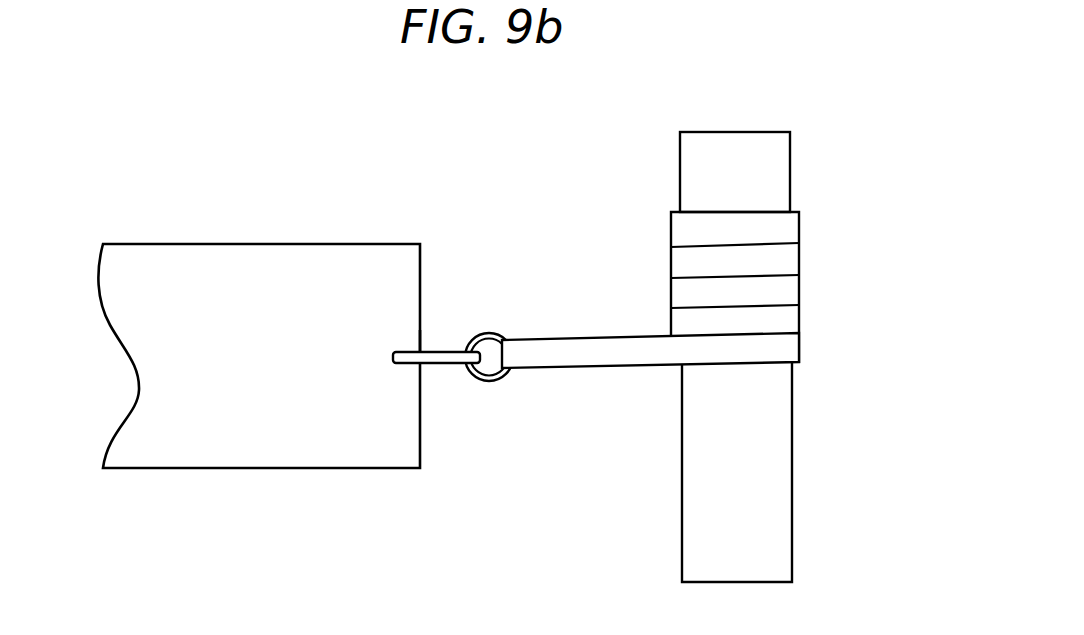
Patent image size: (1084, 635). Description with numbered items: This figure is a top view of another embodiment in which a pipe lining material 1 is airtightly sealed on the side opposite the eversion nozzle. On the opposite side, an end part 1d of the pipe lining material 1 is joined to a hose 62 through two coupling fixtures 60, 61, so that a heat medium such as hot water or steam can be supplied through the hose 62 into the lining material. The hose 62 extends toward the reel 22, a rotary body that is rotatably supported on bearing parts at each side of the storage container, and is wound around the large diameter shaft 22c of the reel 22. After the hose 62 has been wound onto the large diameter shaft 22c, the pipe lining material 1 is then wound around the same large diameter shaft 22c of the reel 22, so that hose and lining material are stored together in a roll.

The pipe lining material 1 is at (197, 242).
The end part 1d is at (403, 322).
The coupling fixture 60 is at (445, 363).
The coupling fixture 61 is at (500, 385).
The hose 62 is at (565, 338).
The reel 22 is at (813, 443).
The large diameter shaft 22c is at (790, 174).